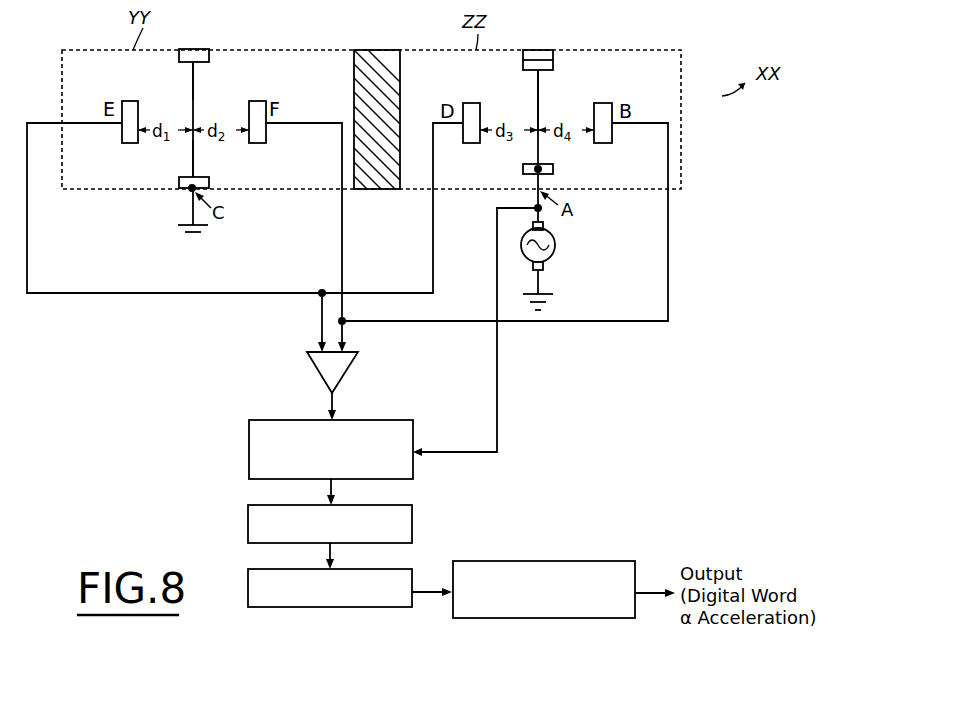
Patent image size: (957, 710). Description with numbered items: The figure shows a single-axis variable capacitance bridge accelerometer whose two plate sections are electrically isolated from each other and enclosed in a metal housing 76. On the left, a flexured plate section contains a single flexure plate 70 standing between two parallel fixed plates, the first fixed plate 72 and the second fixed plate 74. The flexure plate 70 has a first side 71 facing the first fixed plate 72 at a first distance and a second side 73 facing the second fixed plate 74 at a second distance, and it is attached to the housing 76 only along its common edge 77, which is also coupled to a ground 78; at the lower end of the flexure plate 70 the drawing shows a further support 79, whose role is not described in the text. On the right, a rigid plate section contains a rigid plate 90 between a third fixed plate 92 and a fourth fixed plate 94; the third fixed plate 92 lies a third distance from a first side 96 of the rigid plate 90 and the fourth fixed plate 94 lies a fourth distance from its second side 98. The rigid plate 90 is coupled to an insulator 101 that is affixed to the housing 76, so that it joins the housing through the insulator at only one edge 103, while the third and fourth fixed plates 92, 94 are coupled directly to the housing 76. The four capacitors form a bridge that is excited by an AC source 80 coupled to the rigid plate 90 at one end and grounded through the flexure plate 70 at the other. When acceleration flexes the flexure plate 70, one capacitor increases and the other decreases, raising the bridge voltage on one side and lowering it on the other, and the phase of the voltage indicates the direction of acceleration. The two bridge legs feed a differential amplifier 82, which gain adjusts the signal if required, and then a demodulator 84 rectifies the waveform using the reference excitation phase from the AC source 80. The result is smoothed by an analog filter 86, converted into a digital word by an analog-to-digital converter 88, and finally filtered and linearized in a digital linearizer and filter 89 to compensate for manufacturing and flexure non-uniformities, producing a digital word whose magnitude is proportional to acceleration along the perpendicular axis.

The flexure plate 70 is at (190, 152).
The first side 71 is at (192, 96).
The first fixed plate 72 is at (133, 101).
The second side 73 is at (196, 75).
The second fixed plate 74 is at (265, 101).
The housing 76 is at (300, 50).
The common edge 77 is at (200, 49).
The ground 78 is at (189, 225).
The lower support 79 is at (206, 177).
The AC source 80 is at (556, 243).
The differential amplifier 82 is at (310, 372).
The demodulator 84 is at (249, 450).
The analog filter 86 is at (248, 522).
The analog-to-digital converter 88 is at (248, 585).
The digital linearizer and filter 89 is at (565, 561).
The rigid plate 90 is at (545, 84).
The third fixed plate 92 is at (468, 103).
The fourth fixed plate 94 is at (605, 103).
The first side 96 is at (533, 100).
The second side 98 is at (542, 106).
The insulator 101 is at (552, 50).
The edge 103 is at (533, 76).